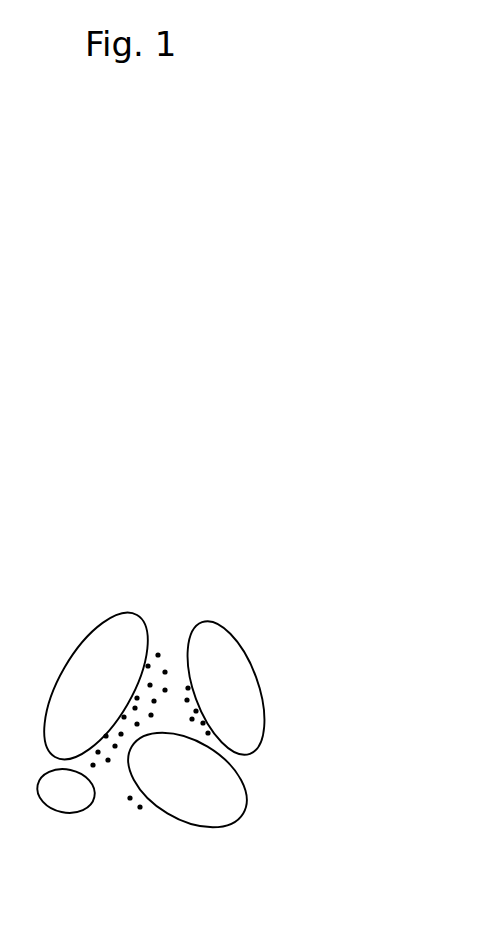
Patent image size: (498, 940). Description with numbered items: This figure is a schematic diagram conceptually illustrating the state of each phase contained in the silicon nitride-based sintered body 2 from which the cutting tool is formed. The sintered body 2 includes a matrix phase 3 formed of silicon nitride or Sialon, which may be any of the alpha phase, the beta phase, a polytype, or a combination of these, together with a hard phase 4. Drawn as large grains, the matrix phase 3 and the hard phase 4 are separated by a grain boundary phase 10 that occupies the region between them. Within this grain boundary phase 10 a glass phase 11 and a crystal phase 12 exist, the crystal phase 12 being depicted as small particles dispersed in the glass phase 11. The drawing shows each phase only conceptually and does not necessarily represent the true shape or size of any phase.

The silicon nitride-based sintered body 2 is at (229, 557).
The matrix phase 3 is at (75, 669).
The hard phase 4 is at (62, 806).
The grain boundary phase 10 is at (345, 688).
The glass phase 11 is at (172, 715).
The crystal phase 12 is at (150, 684).